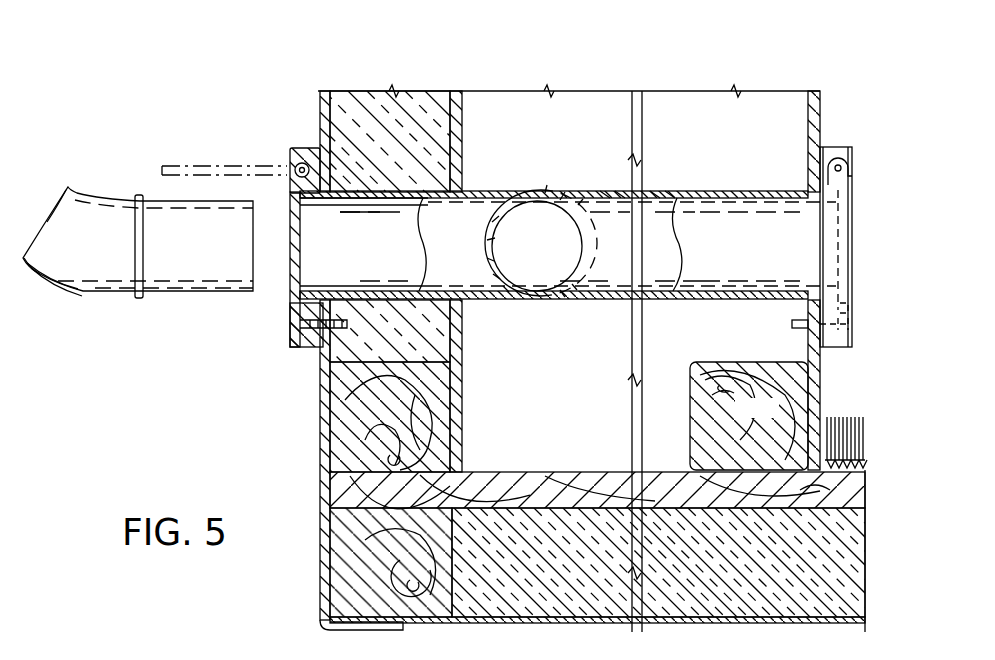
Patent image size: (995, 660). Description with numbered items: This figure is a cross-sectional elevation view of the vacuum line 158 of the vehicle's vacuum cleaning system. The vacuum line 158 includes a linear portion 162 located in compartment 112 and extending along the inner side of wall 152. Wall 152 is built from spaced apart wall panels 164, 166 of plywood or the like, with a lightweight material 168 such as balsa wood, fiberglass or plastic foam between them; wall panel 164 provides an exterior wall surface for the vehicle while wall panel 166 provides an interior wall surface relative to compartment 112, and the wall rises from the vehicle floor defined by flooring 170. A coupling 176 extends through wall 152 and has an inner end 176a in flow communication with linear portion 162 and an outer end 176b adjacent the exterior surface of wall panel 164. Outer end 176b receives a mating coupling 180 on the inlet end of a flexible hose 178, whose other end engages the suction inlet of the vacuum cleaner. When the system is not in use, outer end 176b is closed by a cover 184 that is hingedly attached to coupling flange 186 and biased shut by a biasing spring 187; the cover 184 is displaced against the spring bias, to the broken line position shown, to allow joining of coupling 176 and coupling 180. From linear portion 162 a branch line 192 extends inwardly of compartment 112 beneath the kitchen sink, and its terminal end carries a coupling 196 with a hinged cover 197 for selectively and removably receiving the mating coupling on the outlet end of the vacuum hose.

The compartment 112 is at (845, 393).
The wall 152 is at (312, 407).
The vacuum line 158 is at (497, 298).
The linear portion 162 is at (514, 193).
The wall panel 164 is at (322, 440).
The wall panel 166 is at (464, 424).
The lightweight material 168 is at (424, 100).
The flooring 170 is at (548, 482).
The coupling 176 is at (281, 351).
The inner end 176a is at (481, 192).
The outer end 176b is at (330, 283).
The flexible hose 178 is at (60, 283).
The mating coupling 180 is at (170, 295).
The cover 184 is at (226, 162).
The coupling flange 186 is at (299, 153).
The biasing spring 187 is at (295, 181).
The branch line 192 is at (648, 192).
The coupling 196 is at (836, 132).
The hinged cover 197 is at (836, 218).